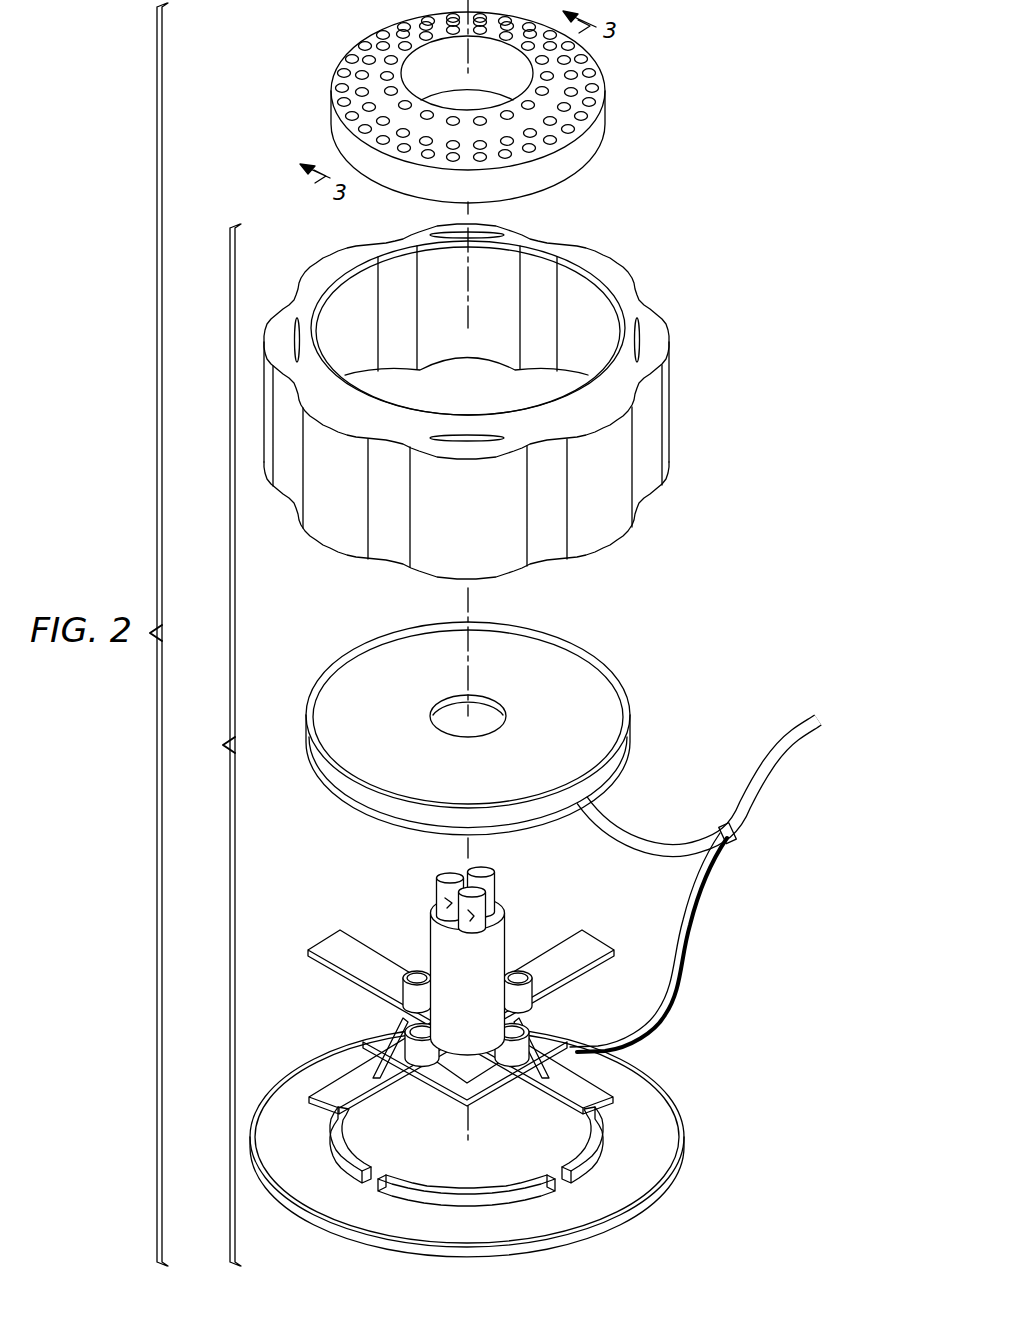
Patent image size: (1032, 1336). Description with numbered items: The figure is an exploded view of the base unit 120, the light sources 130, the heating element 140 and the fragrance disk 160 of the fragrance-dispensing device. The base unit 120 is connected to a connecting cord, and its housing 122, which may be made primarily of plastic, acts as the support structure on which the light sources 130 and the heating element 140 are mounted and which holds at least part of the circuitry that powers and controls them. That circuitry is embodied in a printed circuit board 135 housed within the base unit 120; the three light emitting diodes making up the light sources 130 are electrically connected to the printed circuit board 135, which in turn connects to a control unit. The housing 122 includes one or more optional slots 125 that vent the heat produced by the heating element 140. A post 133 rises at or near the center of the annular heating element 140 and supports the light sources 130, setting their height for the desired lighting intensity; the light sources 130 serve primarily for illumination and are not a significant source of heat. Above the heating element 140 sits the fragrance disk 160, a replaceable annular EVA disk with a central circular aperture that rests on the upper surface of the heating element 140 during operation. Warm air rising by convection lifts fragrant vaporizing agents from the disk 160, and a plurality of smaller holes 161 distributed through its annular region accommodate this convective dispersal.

The base unit 120 is at (214, 745).
The housing 122 is at (672, 405).
The slots 125 is at (639, 318).
The light sources 130 is at (434, 898).
The post 133 is at (505, 941).
The printed circuit board 135 is at (380, 1022).
The heating element 140 is at (570, 653).
The fragrance disk 160 is at (603, 109).
The holes 161 is at (596, 78).